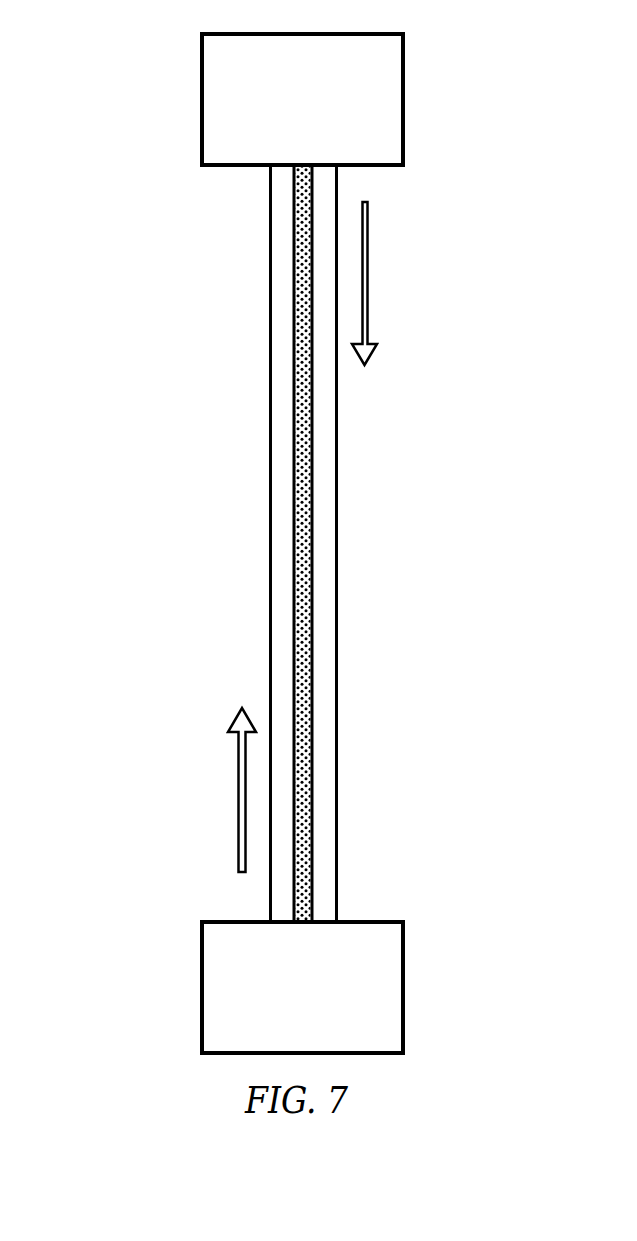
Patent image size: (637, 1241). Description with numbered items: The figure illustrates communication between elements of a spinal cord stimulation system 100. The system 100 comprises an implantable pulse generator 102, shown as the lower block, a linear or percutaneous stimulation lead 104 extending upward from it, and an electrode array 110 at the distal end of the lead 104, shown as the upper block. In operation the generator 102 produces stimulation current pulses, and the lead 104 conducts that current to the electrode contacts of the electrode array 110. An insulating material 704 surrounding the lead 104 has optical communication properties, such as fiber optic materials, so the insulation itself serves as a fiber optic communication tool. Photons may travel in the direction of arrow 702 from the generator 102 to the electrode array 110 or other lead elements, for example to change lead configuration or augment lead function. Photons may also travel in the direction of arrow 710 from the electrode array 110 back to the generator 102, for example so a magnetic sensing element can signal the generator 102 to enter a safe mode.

The system 100 is at (138, 255).
The electrode array 110 is at (404, 87).
The implantable pulse generator 102 is at (404, 977).
The stimulation lead 104 is at (313, 553).
The insulating material 704 is at (330, 729).
The arrow 710 is at (369, 267).
The arrow 702 is at (237, 790).